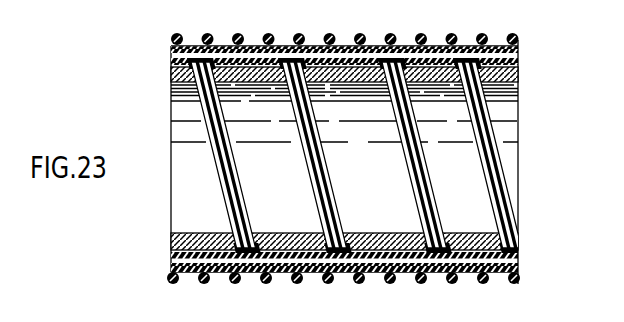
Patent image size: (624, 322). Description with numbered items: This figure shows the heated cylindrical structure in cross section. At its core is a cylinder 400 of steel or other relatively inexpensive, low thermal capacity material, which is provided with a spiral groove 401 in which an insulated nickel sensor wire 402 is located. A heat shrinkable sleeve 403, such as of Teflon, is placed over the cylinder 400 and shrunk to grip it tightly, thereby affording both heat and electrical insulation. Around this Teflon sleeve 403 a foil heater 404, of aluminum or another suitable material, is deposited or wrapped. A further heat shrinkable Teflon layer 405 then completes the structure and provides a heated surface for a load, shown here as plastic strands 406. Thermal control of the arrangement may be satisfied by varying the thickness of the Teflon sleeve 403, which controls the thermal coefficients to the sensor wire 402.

The cylinder 400 is at (518, 108).
The spiral groove 401 is at (513, 190).
The sensor wire 402 is at (500, 160).
The heat shrinkable sleeve 403 is at (518, 82).
The foil heater 404 is at (518, 67).
The Teflon layer 405 is at (518, 53).
The plastic strands 406 is at (517, 40).